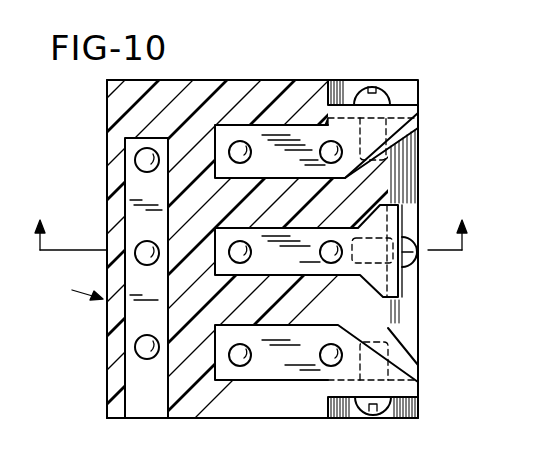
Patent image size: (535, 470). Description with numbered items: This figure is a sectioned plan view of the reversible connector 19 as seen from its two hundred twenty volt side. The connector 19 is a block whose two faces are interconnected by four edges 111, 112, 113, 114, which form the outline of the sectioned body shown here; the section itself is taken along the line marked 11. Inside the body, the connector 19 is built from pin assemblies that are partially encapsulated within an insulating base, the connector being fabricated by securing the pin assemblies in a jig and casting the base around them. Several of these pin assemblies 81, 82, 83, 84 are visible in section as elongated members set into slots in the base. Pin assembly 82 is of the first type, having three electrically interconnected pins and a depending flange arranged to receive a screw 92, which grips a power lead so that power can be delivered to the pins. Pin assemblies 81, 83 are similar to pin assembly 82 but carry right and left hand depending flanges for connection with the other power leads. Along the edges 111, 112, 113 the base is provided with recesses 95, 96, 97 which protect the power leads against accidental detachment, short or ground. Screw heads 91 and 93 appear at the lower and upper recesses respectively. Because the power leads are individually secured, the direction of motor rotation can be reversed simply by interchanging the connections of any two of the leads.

The section line arrows 11 is at (256, 240).
The connector 19 is at (81, 283).
The pin assembly 81 is at (263, 378).
The pin assembly 82 is at (392, 218).
The pin assembly 83 is at (297, 133).
The pin assembly 84 is at (128, 200).
The lower screw head 91 is at (374, 418).
The screw 92 is at (412, 260).
The upper screw seat 93 is at (393, 88).
The recess 95 is at (405, 400).
The recess 96 is at (410, 340).
The recess 97 is at (349, 92).
The edge 111 is at (290, 420).
The edge 112 is at (408, 313).
The edge 113 is at (197, 80).
The edge 114 is at (107, 120).